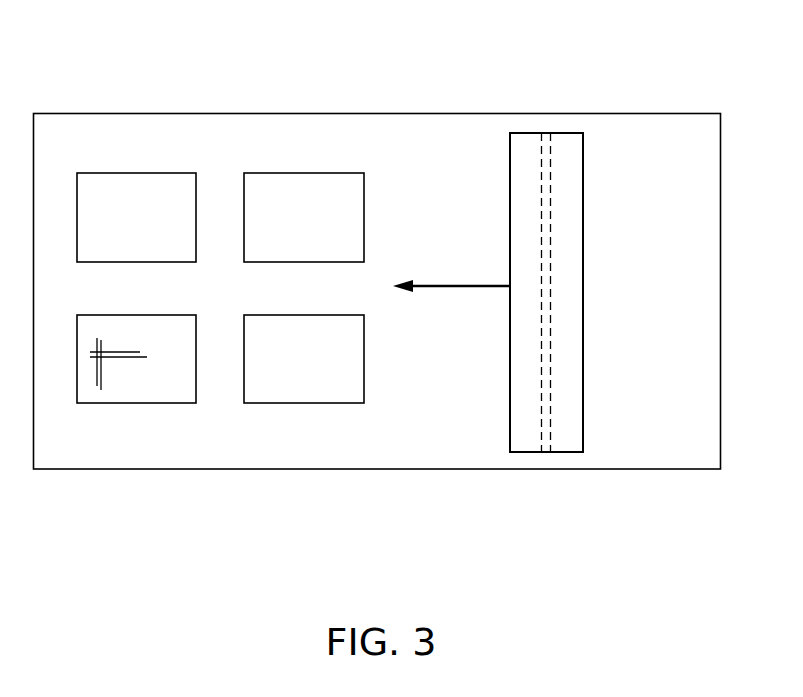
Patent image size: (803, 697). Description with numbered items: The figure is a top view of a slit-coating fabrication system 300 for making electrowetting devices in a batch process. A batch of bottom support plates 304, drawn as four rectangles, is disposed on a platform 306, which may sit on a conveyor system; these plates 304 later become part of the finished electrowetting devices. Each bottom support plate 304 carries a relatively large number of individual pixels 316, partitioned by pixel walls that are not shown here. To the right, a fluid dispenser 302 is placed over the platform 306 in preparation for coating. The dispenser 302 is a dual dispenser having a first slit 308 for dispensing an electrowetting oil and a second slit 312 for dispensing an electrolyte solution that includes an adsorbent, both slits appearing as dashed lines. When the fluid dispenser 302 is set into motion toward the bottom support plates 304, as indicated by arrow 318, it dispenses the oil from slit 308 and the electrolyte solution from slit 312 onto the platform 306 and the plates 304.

The slit-coating fabrication system 300 is at (655, 67).
The fluid dispenser 302 is at (583, 175).
The bottom support plates 304 is at (114, 228).
The platform 306 is at (660, 432).
The first slit 308 is at (540, 443).
The second slit 312 is at (552, 432).
The pixels 316 is at (92, 353).
The arrow 318 is at (457, 286).